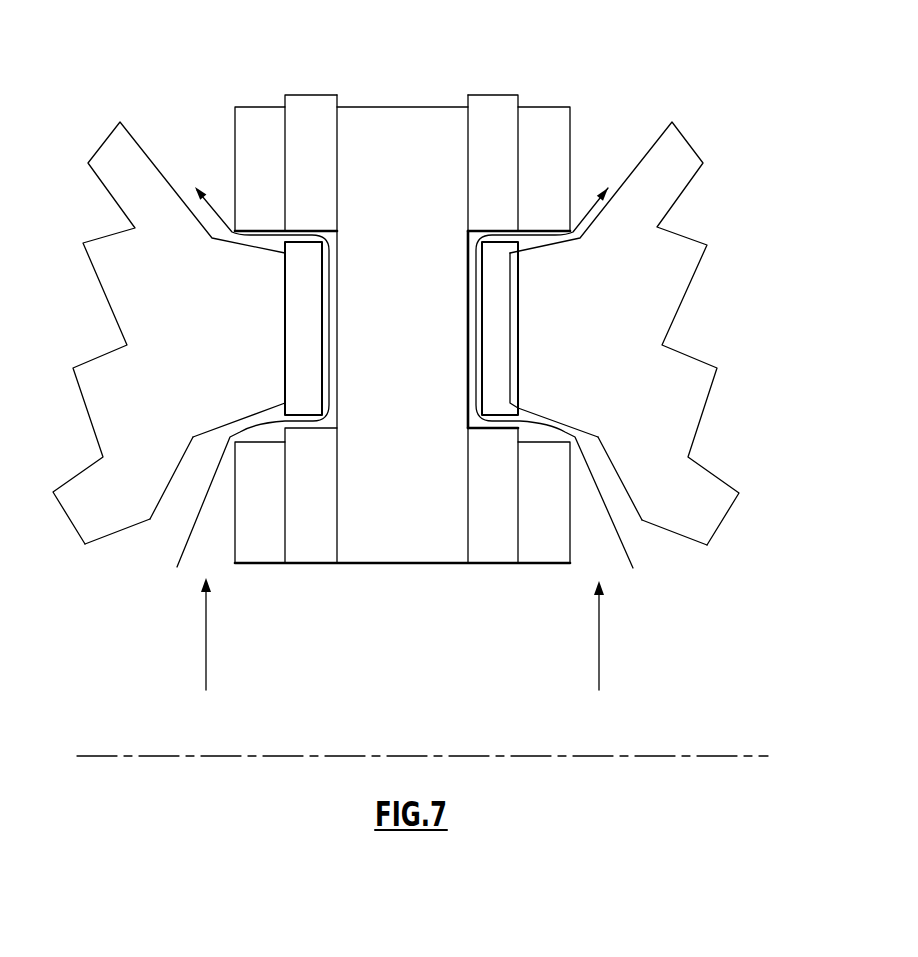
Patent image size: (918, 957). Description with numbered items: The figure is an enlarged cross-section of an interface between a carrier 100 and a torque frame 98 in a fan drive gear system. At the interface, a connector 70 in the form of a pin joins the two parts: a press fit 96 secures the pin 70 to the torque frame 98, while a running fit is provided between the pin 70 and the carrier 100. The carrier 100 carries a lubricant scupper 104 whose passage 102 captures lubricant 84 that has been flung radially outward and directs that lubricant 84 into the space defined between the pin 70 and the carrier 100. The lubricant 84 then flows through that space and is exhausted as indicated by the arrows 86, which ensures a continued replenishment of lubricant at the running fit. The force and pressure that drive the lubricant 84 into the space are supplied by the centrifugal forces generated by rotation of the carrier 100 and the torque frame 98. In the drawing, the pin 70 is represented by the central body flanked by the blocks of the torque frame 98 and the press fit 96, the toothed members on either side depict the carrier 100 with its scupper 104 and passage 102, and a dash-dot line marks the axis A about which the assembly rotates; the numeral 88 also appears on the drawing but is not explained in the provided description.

The connector 70 is at (373, 537).
The lubricant 84 is at (175, 567).
The arrows 86 is at (210, 210).
The core body 88 is at (420, 105).
The press fit 96 is at (467, 535).
The torque frame 98 is at (312, 537).
The carrier 100 is at (112, 418).
The passage 102 is at (263, 412).
The lubricant scupper 104 is at (128, 518).
The axis A is at (712, 757).